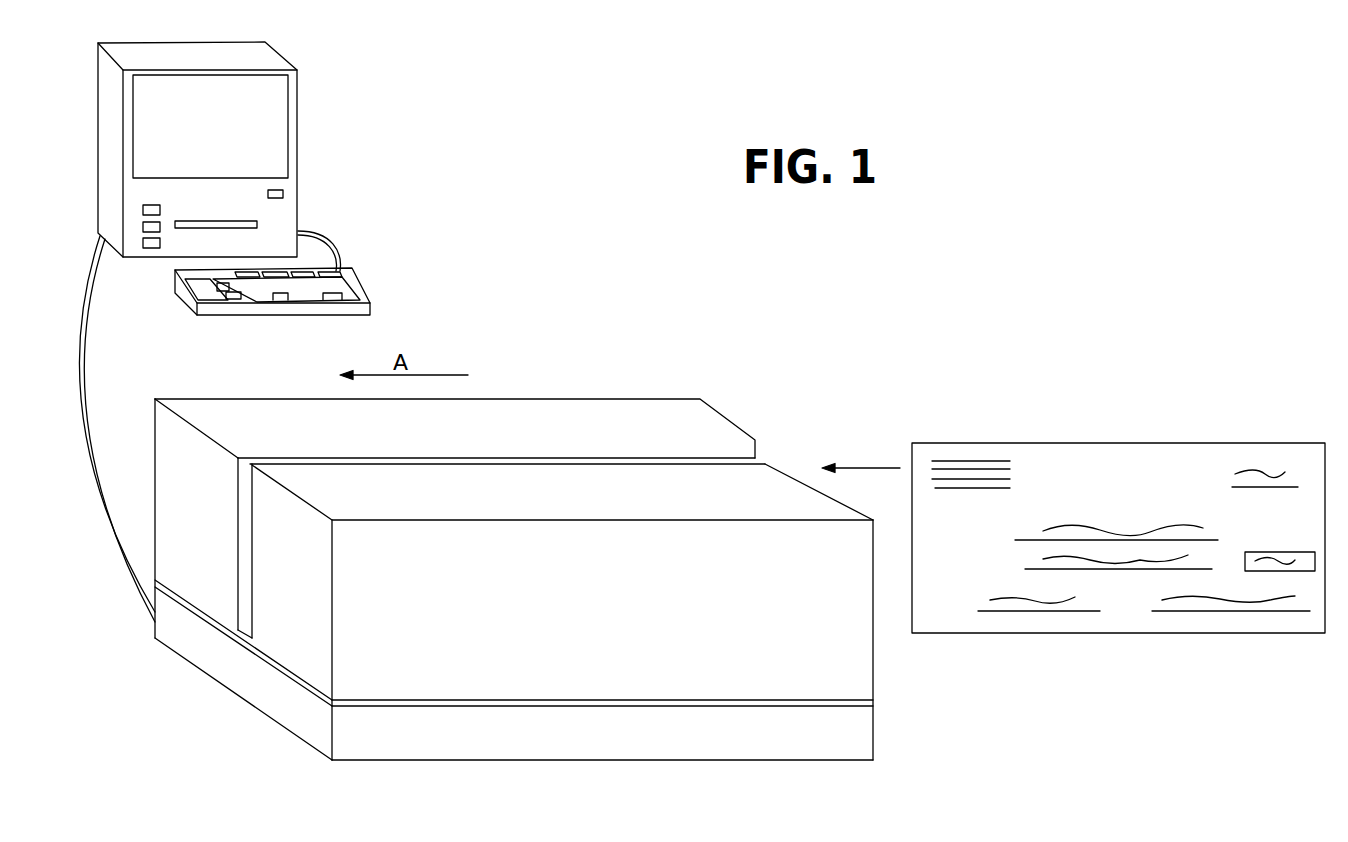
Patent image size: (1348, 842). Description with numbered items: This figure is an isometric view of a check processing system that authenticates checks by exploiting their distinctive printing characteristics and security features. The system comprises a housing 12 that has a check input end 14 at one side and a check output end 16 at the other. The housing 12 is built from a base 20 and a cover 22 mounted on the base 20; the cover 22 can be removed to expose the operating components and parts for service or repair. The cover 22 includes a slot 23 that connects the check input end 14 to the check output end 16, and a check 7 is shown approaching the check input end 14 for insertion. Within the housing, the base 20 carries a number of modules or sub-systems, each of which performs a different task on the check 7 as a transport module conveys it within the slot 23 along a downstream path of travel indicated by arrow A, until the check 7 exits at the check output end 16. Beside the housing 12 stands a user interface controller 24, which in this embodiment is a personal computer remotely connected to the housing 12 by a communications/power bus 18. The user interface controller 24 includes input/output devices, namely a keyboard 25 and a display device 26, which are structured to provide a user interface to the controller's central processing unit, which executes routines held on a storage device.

The check 7 is at (1073, 443).
The housing 12 is at (525, 534).
The check input end 14 is at (786, 439).
The check output end 16 is at (214, 585).
The communications/power bus 18 is at (90, 379).
The base 20 is at (875, 730).
The cover 22 is at (875, 654).
The slot 23 is at (627, 457).
The user interface controller 24 is at (251, 141).
The keyboard 25 is at (353, 277).
The display device 26 is at (248, 133).